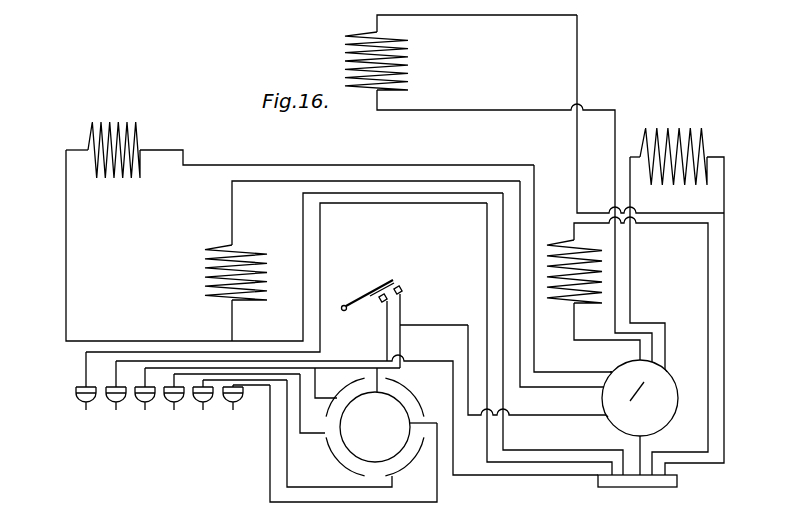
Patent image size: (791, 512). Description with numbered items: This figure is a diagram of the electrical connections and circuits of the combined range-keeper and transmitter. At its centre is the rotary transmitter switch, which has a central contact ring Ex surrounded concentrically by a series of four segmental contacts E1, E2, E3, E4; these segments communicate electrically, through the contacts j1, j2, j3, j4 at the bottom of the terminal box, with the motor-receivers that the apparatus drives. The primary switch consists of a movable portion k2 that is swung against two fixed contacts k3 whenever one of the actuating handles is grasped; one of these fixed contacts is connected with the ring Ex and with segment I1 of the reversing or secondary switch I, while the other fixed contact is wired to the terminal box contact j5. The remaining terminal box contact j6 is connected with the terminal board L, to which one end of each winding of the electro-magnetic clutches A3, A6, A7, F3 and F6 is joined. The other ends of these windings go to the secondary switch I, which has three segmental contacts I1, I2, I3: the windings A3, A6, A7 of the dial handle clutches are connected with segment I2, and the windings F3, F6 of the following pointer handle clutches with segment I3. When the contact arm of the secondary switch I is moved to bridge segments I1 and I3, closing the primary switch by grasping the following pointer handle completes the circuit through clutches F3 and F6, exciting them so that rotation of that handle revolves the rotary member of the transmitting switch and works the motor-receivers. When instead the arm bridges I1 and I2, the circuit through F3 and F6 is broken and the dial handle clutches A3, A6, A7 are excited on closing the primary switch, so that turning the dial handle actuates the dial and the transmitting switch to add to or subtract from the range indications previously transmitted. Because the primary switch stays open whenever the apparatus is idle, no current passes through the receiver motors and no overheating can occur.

The electro-magnetic clutch winding F3 is at (300, 137).
The electro-magnetic clutch winding F6 is at (349, 261).
The electro-magnetic clutch winding A7 is at (486, 188).
The electro-magnetic clutch winding A3 is at (677, 292).
The electro-magnetic clutch winding A6 is at (626, 346).
The switch lever k2 is at (389, 281).
The switch contacts k3 is at (401, 290).
The central contact ring Ex is at (388, 415).
The segmental contact E1 is at (346, 389).
The segmental contact E2 is at (340, 464).
The segmental contact E3 is at (410, 464).
The segmental contact E4 is at (409, 396).
The terminal box contact j1 is at (145, 410).
The terminal box contact j2 is at (174, 410).
The terminal box contact j3 is at (203, 410).
The terminal box contact j4 is at (233, 410).
The terminal box contact j5 is at (86, 410).
The terminal box contact j6 is at (116, 410).
The reversing or secondary switch I is at (640, 417).
The segmental contact of secondary switch I1 is at (610, 419).
The segmental contact of secondary switch I2 is at (671, 380).
The segmental contact of secondary switch I3 is at (616, 366).
The terminal board L is at (657, 482).